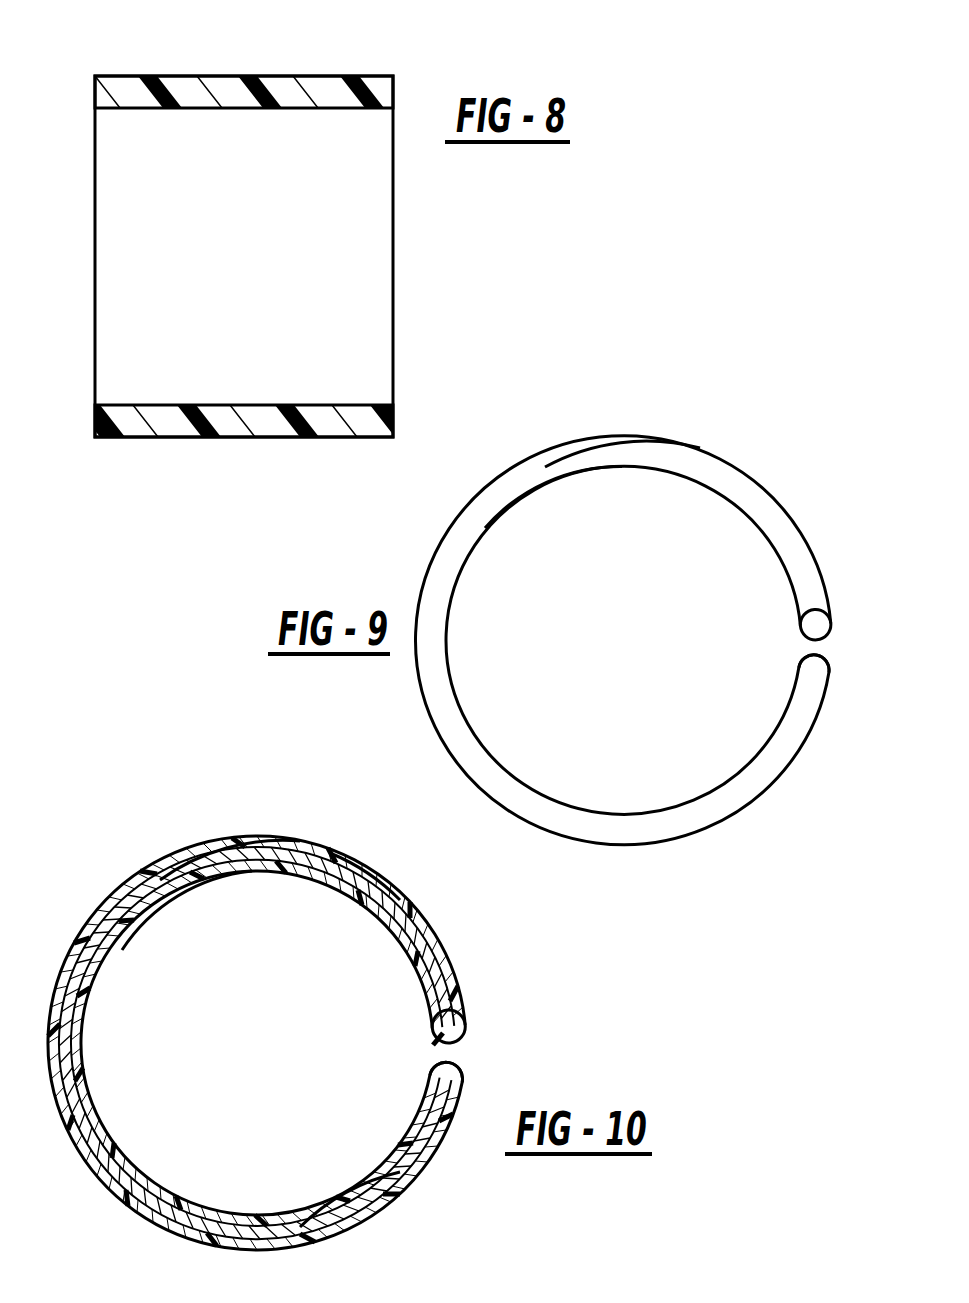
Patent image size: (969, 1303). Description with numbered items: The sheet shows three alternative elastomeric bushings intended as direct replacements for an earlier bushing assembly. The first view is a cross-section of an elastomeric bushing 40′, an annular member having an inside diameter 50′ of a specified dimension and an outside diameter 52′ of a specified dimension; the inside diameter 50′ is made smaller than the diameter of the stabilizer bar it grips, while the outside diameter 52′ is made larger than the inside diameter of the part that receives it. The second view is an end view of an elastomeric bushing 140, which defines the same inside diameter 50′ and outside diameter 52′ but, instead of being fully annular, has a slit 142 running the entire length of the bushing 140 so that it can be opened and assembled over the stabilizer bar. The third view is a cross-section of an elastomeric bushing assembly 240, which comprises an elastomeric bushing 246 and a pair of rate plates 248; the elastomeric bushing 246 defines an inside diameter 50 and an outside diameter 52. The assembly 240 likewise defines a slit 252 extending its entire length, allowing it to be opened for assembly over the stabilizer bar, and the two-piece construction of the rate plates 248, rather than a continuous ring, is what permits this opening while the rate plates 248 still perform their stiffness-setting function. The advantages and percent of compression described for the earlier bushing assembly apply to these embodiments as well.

In FIG. 8, the elastomeric bushing 40′ is at (365, 52).
In FIG. 8, the outside diameter 52′ is at (183, 76).
In FIG. 9, the outside diameter 52′ is at (588, 434).
In FIG. 8, the inside diameter 50′ is at (308, 109).
In FIG. 9, the inside diameter 50′ is at (520, 497).
In FIG. 9, the elastomeric bushing 140 is at (692, 458).
In FIG. 9, the slit 142 is at (813, 648).
In FIG. 10, the elastomeric bushing assembly 240 is at (340, 822).
In FIG. 10, the elastomeric bushing 246 is at (203, 843).
In FIG. 10, the rate plates 248 is at (372, 870).
In FIG. 10, the inside diameter 50 is at (132, 920).
In FIG. 10, the slit 252 is at (450, 1052).
In FIG. 10, the outside diameter 52 is at (352, 1215).